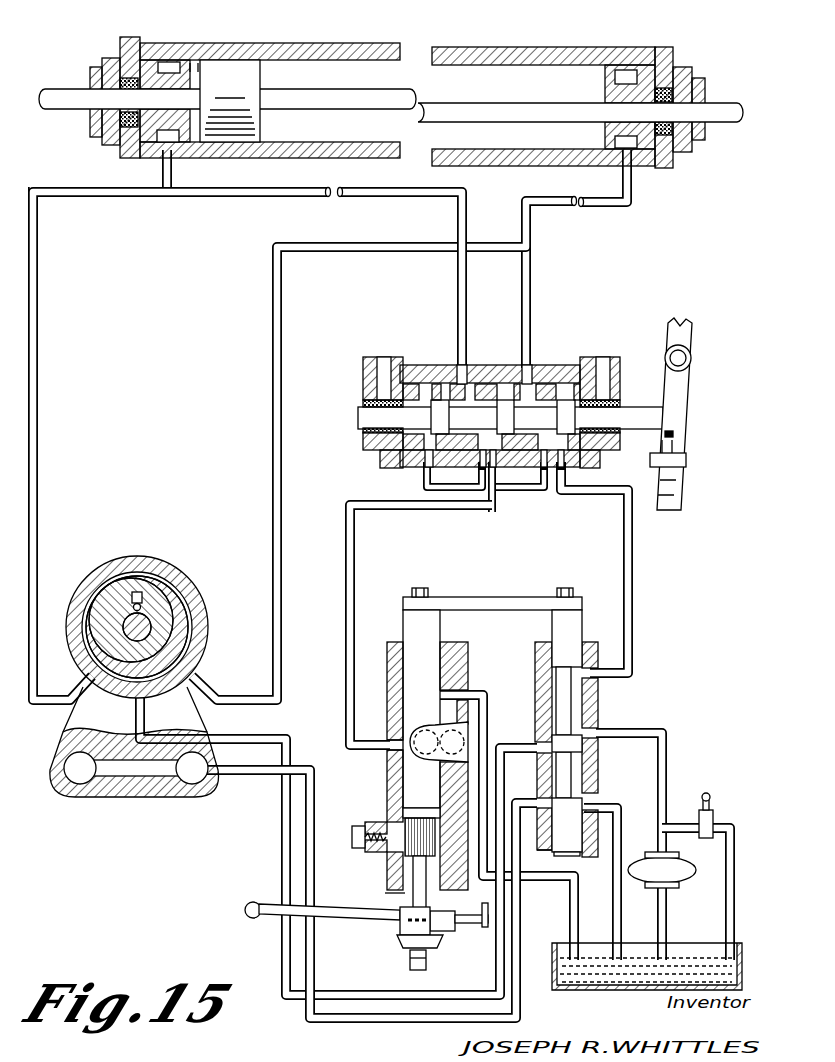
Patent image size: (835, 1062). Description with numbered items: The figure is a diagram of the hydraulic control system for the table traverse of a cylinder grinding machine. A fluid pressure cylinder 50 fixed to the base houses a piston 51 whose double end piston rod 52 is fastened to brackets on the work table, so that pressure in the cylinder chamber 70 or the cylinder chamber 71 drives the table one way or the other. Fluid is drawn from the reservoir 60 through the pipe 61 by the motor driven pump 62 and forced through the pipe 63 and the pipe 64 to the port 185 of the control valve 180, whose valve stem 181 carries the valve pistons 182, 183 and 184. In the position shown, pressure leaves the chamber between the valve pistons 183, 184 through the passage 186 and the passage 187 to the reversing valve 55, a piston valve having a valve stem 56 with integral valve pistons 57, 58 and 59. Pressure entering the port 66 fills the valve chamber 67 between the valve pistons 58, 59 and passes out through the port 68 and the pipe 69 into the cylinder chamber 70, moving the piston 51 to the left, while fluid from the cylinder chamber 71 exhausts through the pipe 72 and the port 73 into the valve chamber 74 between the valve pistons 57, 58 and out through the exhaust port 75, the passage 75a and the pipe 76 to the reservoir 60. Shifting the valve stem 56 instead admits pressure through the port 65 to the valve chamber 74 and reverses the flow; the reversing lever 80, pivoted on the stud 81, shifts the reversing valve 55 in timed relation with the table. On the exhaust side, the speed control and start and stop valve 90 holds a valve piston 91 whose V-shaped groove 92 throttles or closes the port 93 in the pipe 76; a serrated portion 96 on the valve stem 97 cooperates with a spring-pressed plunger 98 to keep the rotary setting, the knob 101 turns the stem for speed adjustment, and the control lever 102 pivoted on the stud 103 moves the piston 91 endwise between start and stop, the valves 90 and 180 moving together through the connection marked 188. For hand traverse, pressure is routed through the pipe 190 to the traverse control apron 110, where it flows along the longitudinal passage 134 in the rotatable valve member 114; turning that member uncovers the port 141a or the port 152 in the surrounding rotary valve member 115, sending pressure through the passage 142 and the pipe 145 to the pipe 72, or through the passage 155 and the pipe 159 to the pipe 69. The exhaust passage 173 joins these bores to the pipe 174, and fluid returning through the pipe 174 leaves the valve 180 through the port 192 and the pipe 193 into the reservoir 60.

The fluid pressure cylinder 50 is at (285, 158).
The piston 51 is at (222, 136).
The double end piston rod 52 is at (62, 112).
The control or reversing valve 55 is at (499, 391).
The valve stem 56 is at (638, 412).
The valve piston 57 is at (440, 405).
The valve piston 58 is at (505, 405).
The valve piston 59 is at (565, 405).
The fluid reservoir 60 is at (580, 990).
The pipe 61 is at (660, 922).
The motor driven fluid pressure pump 62 is at (672, 880).
The pipe 63 is at (660, 845).
The pipe 64 is at (668, 745).
The port 65 is at (420, 482).
The port 66 is at (568, 480).
The valve chamber 67 is at (541, 484).
The port 68 is at (522, 372).
The pipe or passage 69 is at (605, 207).
The cylinder chamber 70 is at (316, 150).
The cylinder chamber 71 is at (195, 70).
The pipe or passage 72 is at (280, 200).
The port 73 is at (448, 372).
The valve chamber 74 is at (481, 472).
The exhaust port 75 is at (496, 490).
The pipe or passage 75a is at (353, 553).
The pipe 76 is at (478, 700).
The reversing lever 80 is at (683, 414).
The stud 81 is at (682, 361).
The combined speed control and start and stop valve 90 is at (397, 630).
The valve piston 91 is at (393, 775).
The V-shaped passage or groove 92 is at (388, 752).
The port 93 is at (420, 725).
The serrated portion 96 is at (390, 822).
The valve stem 97 is at (412, 898).
The spring-pressed plunger 98 is at (352, 838).
The manually operable control knob 101 is at (410, 962).
The manually operable control lever 102 is at (253, 920).
The stud 103 is at (479, 930).
The hydraulic traverse control apron 110 is at (140, 604).
The rotatable valve member 114 is at (171, 622).
The rotary valve member 115 is at (186, 600).
The longitudinally extending passage 134 is at (132, 594).
The port or passage 141a is at (84, 595).
The longitudinally extending passage 142 is at (78, 790).
The pipe 145 is at (34, 547).
The port or passage 152 is at (190, 584).
The longitudinally extending passage 155 is at (193, 788).
The pipe 159 is at (413, 252).
The exhaust passage 173 is at (134, 759).
The pipe 174 is at (316, 779).
The control valve 180 is at (579, 743).
The valve stem 181 is at (572, 690).
The valve piston 182 is at (572, 852).
The valve piston 183 is at (578, 746).
The valve piston 184 is at (575, 640).
The port 185 is at (600, 712).
The passage 186 is at (633, 604).
The passage 187 is at (520, 500).
The cross head 188 is at (492, 597).
The pipe 190 is at (271, 737).
The port 192 is at (583, 790).
The pipe 193 is at (618, 812).